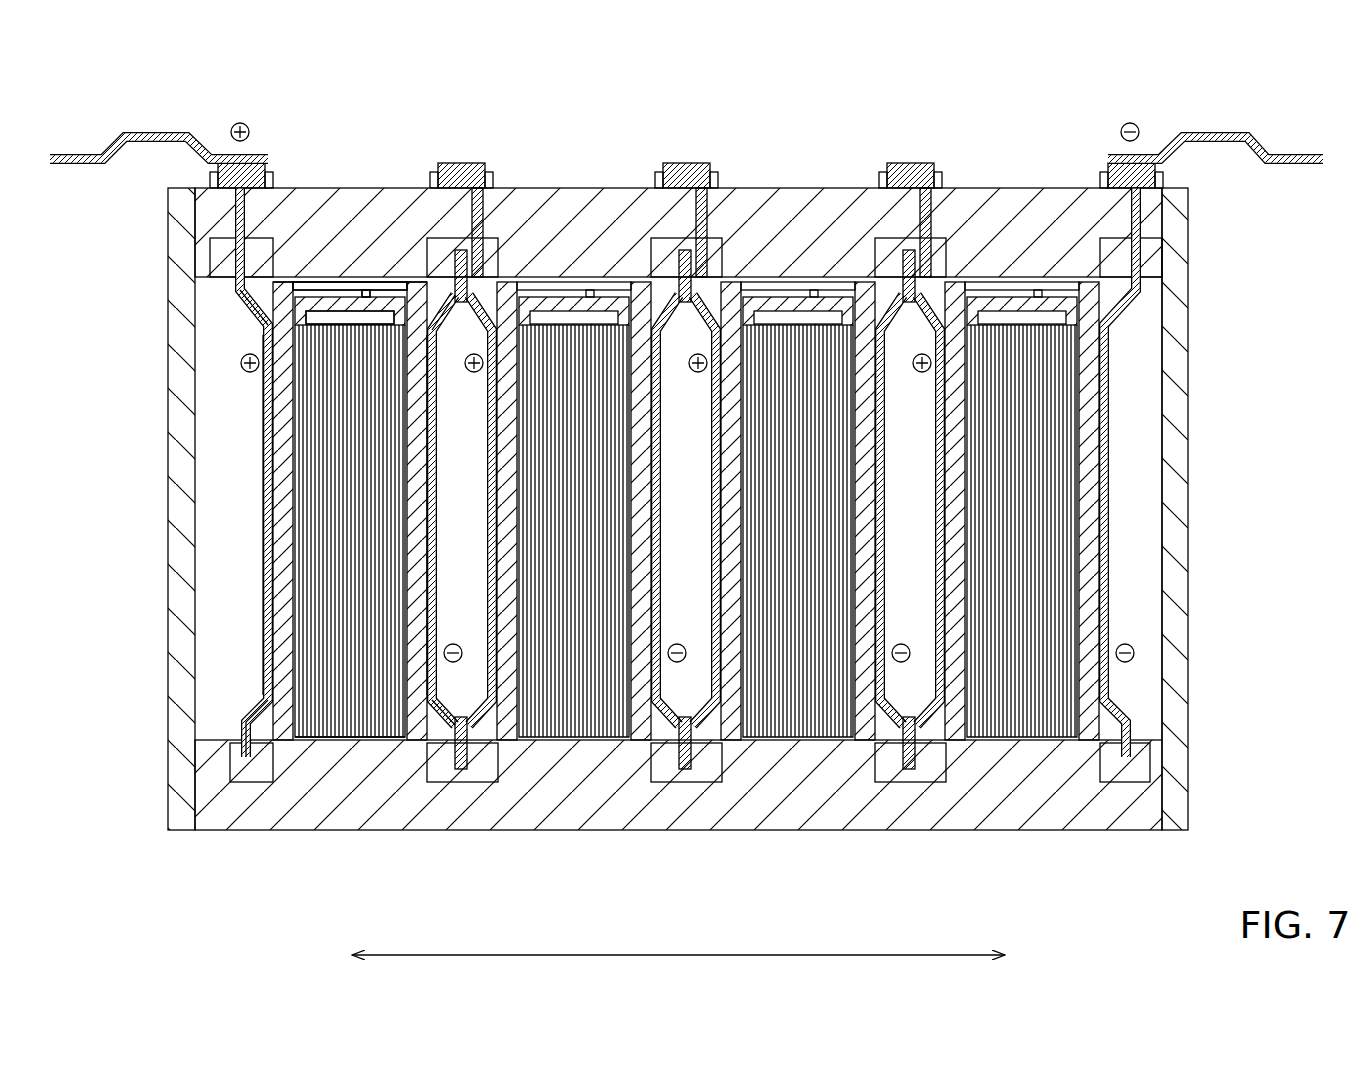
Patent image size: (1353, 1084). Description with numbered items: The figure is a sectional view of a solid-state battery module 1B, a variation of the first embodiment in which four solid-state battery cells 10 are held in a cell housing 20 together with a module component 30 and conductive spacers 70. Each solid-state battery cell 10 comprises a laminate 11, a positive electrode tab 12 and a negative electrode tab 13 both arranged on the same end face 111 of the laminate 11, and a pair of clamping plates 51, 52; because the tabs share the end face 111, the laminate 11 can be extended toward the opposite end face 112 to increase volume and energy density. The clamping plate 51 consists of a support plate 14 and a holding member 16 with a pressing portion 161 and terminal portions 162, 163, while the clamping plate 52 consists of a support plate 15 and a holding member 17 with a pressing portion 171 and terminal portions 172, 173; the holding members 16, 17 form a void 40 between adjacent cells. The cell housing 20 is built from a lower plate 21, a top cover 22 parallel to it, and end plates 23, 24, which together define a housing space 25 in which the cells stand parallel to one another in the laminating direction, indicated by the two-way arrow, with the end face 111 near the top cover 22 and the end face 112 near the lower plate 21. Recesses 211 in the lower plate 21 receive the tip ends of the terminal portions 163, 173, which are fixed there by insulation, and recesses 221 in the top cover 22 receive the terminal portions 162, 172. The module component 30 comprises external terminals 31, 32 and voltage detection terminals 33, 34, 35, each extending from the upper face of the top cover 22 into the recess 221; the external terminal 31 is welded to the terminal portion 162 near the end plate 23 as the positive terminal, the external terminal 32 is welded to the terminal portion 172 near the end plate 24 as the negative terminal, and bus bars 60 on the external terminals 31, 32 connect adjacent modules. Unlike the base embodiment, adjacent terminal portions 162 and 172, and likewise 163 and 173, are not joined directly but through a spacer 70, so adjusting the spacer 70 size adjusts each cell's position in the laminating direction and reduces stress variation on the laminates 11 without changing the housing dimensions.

The solid-state battery module 1B is at (686, 500).
The solid-state battery cell 10 is at (615, 498).
The laminate 11 is at (372, 748).
The end face 111 is at (330, 310).
The end face 112 is at (315, 745).
The positive electrode tab 12 is at (322, 300).
The negative electrode tab 13 is at (346, 300).
The support plate 14 is at (300, 297).
The support plate 15 is at (378, 290).
The holding member 16 is at (351, 498).
The pressing portion 161 is at (263, 608).
The terminal portion 162 is at (235, 285).
The terminal portion 163 is at (240, 742).
The holding member 17 is at (421, 498).
The pressing portion 171 is at (432, 700).
The terminal portion 172 is at (445, 305).
The terminal portion 173 is at (440, 718).
The cell housing 20 is at (695, 511).
The lower plate 21 is at (725, 829).
The recess 211 is at (247, 780).
The top cover 22 is at (675, 191).
The recess 221 is at (230, 272).
The end plate 23 is at (183, 520).
The end plate 24 is at (1175, 514).
The housing space 25 is at (1140, 447).
The module component 30 is at (687, 173).
The external terminal 31 is at (230, 165).
The external terminal 32 is at (1144, 163).
The voltage detection terminal 33 is at (462, 163).
The voltage detection terminal 34 is at (688, 163).
The voltage detection terminal 35 is at (912, 163).
The void 40 is at (688, 502).
The clamping plate 51 is at (252, 72).
The clamping plate 52 is at (408, 265).
The bus bar 60 is at (160, 132).
The conductive spacer 70 is at (463, 255).